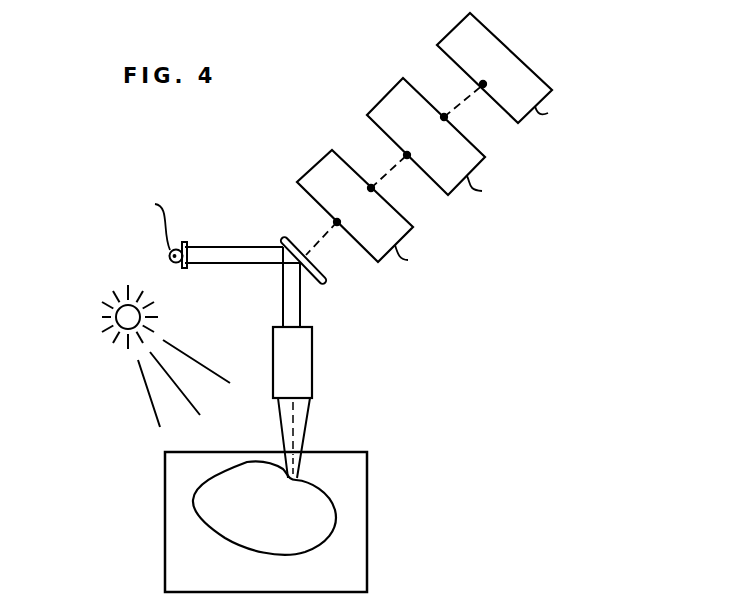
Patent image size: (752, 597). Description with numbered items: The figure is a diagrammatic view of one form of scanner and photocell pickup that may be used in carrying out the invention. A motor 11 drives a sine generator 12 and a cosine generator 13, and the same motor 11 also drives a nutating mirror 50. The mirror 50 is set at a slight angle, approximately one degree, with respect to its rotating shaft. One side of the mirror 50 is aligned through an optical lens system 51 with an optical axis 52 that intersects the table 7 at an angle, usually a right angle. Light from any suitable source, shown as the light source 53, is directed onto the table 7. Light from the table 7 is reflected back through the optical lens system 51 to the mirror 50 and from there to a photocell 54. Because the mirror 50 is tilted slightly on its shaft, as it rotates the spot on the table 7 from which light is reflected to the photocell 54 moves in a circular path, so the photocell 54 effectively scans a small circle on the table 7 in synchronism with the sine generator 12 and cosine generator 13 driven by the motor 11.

The sine generator 12 is at (452, 29).
The cosine generator 13 is at (385, 96).
The motor 11 is at (318, 168).
The nutating mirror 50 is at (324, 283).
The optical lens system 51 is at (303, 362).
The optical axis 52 is at (295, 443).
The light source 53 is at (100, 317).
The photocell 54 is at (174, 264).
The table 7 is at (367, 517).